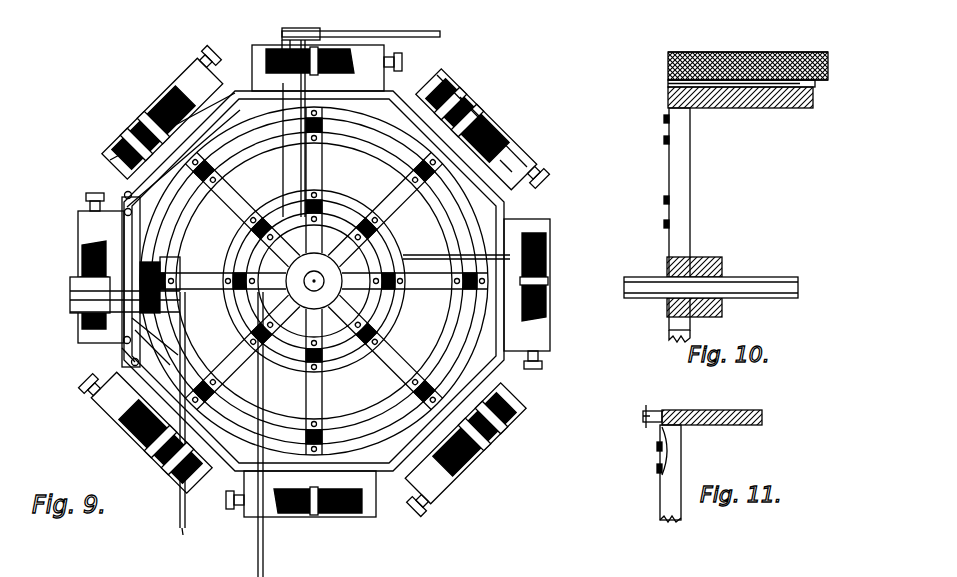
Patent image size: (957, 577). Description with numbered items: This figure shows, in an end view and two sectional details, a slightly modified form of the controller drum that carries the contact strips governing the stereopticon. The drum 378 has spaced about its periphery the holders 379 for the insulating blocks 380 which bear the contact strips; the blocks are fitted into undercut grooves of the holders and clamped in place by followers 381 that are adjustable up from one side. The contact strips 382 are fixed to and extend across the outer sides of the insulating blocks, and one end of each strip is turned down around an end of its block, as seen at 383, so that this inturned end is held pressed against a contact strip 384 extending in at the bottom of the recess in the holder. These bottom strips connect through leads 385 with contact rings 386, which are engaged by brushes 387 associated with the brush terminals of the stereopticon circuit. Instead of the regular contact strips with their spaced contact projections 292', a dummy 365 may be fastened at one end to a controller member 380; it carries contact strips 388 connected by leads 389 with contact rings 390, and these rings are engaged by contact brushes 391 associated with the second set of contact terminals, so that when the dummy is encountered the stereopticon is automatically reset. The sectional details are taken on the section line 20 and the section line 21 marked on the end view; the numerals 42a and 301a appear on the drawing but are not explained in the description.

In FIG. 9, the section line 20 is at (305, 32).
In FIG. 9, the section line 21 is at (87, 178).
In FIG. 9, the shaft 42a is at (317, 284).
In FIG. 10, the shaft 42a is at (770, 278).
In FIG. 9, the bar 301a is at (400, 28).
In FIG. 9, the dummy 365 is at (72, 262).
In FIG. 9, the drum 378 is at (530, 207).
In FIG. 10, the drum 378 is at (742, 112).
In FIG. 11, the drum 378 is at (746, 428).
In FIG. 9, the holder 379 is at (440, 88).
In FIG. 9, the insulating block 380 is at (492, 130).
In FIG. 10, the insulating block 380 is at (770, 54).
In FIG. 9, the follower 381 is at (510, 150).
In FIG. 9, the contact strip 382 is at (552, 262).
In FIG. 10, the contact strip 382 is at (710, 52).
In FIG. 9, the inturned end of contact strip 383 is at (278, 50).
In FIG. 10, the inturned end of contact strip 383 is at (668, 83).
In FIG. 9, the contact strip 384 is at (470, 112).
In FIG. 10, the contact strip 384 is at (666, 98).
In FIG. 9, the lead 385 is at (400, 182).
In FIG. 10, the lead 385 is at (690, 170).
In FIG. 9, the contact ring 386 is at (372, 253).
In FIG. 10, the contact ring 386 is at (663, 226).
In FIG. 9, the brush 387 is at (186, 229).
In FIG. 9, the contact strip 388 is at (70, 290).
In FIG. 9, the lead 389 is at (122, 348).
In FIG. 11, the lead 389 is at (652, 404).
In FIG. 9, the contact ring 390 is at (254, 128).
In FIG. 10, the contact ring 390 is at (663, 138).
In FIG. 11, the contact ring 390 is at (657, 470).
In FIG. 9, the contact brush 391 is at (176, 272).
In FIG. 9, the contact projection 292' is at (586, 570).